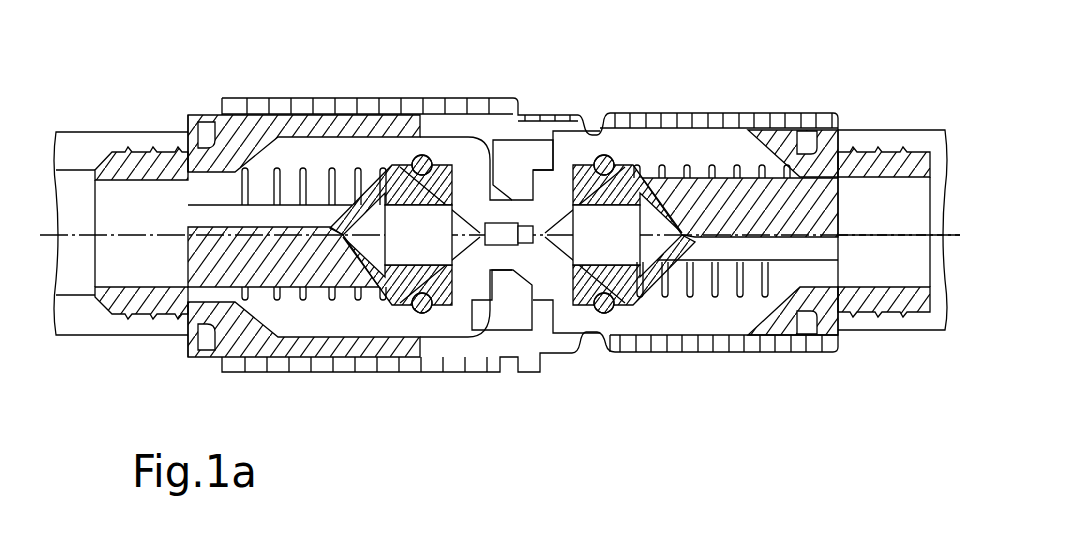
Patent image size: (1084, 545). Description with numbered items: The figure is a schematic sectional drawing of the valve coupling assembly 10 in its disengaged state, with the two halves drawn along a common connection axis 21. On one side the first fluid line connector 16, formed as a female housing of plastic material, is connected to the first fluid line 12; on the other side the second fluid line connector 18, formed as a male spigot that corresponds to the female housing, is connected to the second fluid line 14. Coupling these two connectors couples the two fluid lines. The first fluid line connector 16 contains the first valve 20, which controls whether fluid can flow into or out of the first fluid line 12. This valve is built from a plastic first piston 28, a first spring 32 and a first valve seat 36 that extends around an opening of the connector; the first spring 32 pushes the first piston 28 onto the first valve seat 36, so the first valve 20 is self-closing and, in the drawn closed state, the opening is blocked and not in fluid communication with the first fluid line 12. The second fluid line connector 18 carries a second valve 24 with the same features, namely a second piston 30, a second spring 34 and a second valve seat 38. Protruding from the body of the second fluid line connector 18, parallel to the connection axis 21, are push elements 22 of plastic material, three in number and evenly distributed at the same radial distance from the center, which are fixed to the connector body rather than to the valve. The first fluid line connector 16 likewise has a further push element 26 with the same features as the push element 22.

The valve coupling assembly 10 is at (699, 104).
The first fluid line 12 is at (913, 320).
The second fluid line 14 is at (102, 147).
The first fluid line connector 16 is at (483, 107).
The second fluid line connector 18 is at (282, 125).
The first valve 20 is at (620, 297).
The connection axis 21 is at (907, 230).
The push element 22 is at (507, 246).
The second valve 24 is at (407, 297).
The further push element 26 is at (528, 183).
The first piston 28 is at (812, 217).
The second piston 30 is at (205, 265).
The first spring 32 is at (713, 300).
The second spring 34 is at (337, 292).
The first valve seat 36 is at (610, 312).
The second valve seat 38 is at (424, 314).